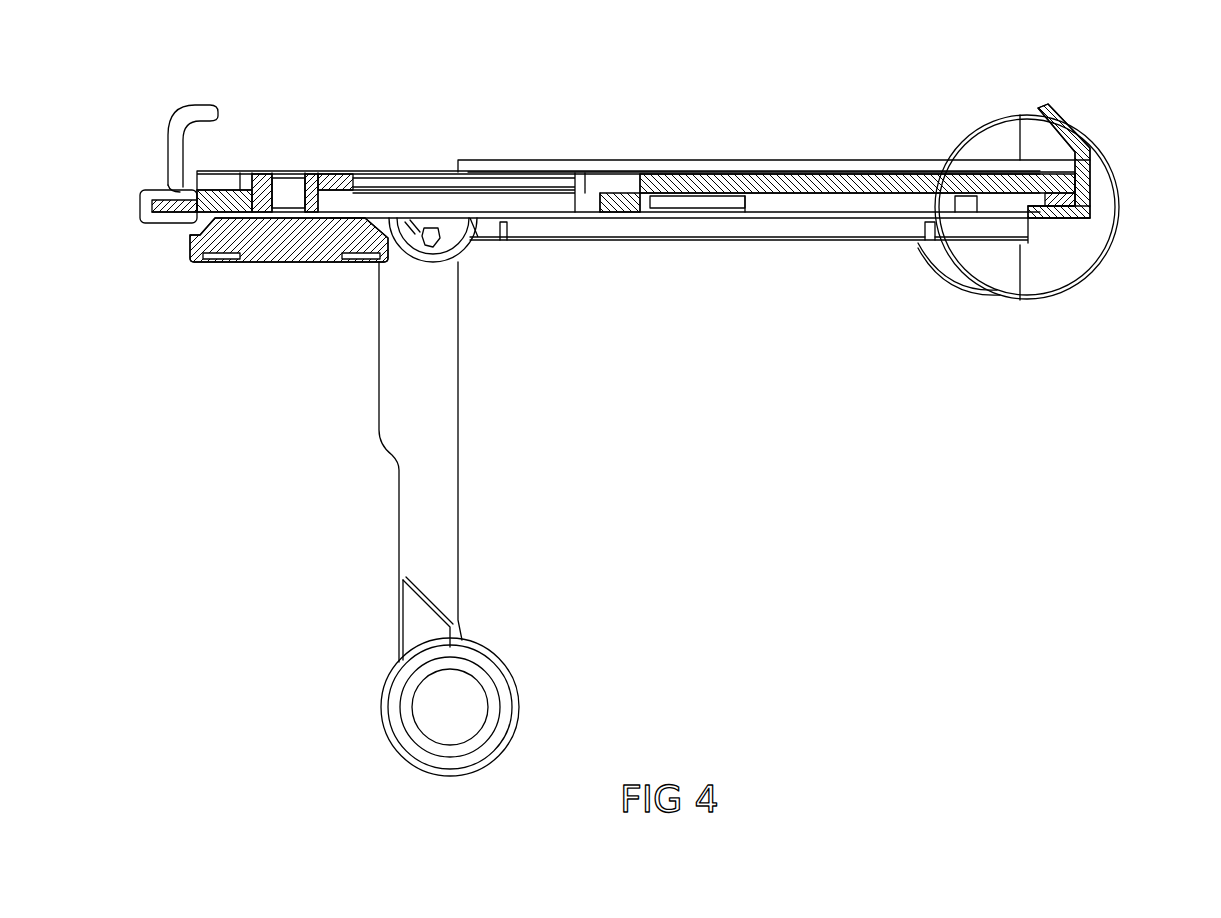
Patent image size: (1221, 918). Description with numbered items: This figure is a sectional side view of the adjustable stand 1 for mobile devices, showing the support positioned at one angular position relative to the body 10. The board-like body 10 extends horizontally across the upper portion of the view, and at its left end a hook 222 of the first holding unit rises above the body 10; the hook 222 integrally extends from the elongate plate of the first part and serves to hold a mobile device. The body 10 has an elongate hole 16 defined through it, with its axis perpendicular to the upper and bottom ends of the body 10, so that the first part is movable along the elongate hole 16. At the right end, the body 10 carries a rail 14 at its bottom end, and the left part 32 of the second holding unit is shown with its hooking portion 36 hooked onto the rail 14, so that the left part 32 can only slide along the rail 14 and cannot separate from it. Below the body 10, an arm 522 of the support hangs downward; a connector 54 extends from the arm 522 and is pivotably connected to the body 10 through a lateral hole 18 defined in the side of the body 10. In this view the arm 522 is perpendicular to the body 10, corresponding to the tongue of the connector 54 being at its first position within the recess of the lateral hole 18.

The adjustable stand 1 is at (247, 353).
The body 10 is at (672, 185).
The rail 14 is at (1057, 222).
The elongate hole 16 is at (392, 187).
The lateral hole 18 is at (438, 228).
The left part 32 is at (1070, 122).
The hooking portion 36 is at (1087, 172).
The connector 54 is at (515, 291).
The hook 222 is at (193, 105).
The arm 522 is at (388, 405).